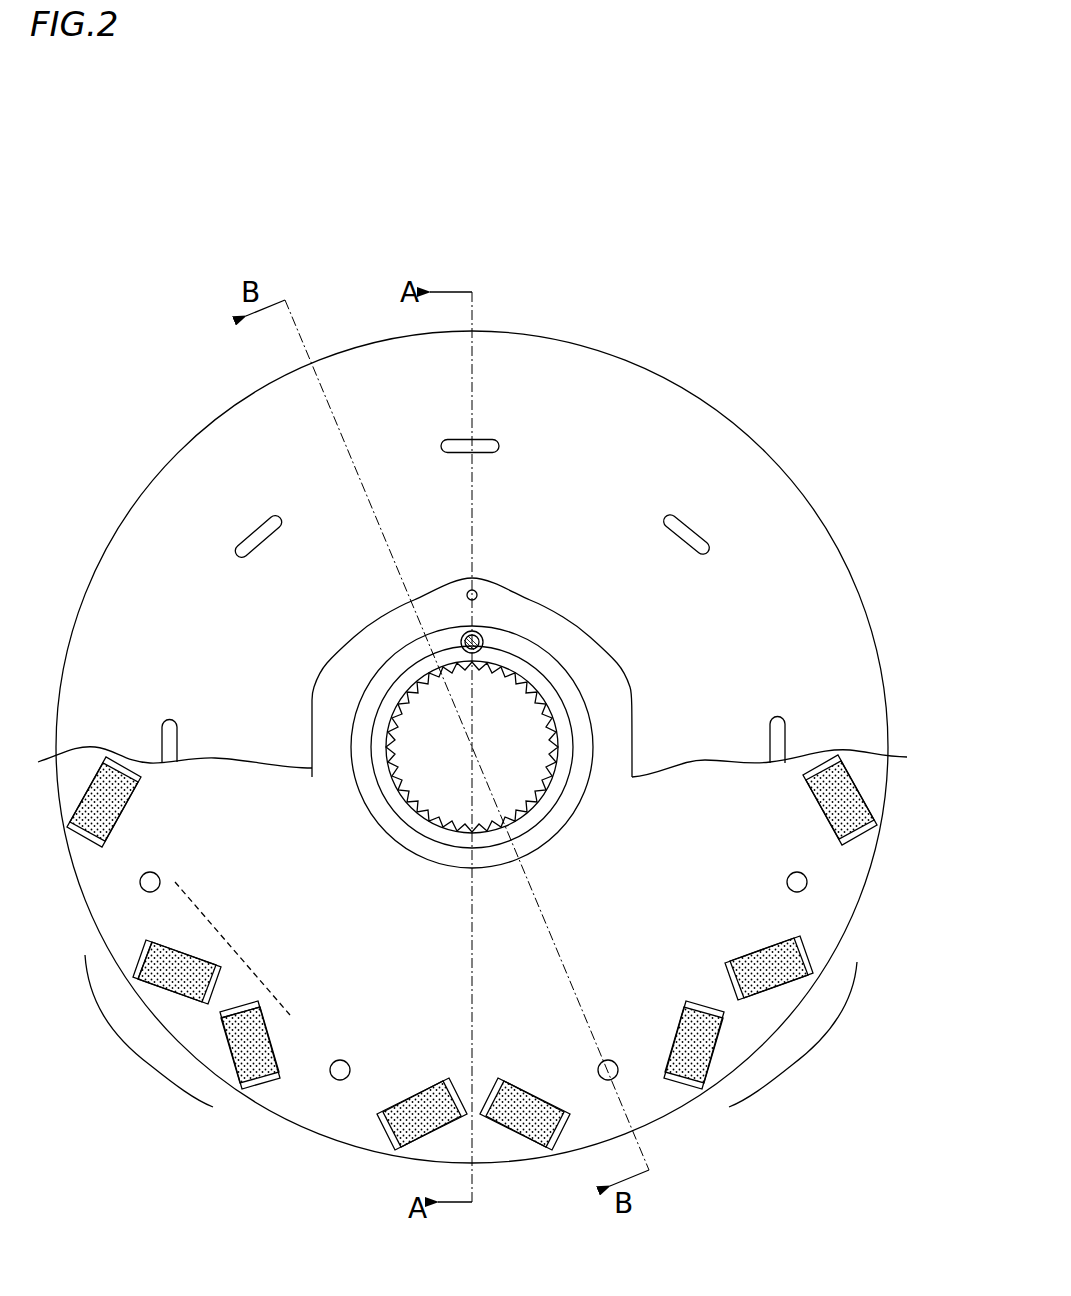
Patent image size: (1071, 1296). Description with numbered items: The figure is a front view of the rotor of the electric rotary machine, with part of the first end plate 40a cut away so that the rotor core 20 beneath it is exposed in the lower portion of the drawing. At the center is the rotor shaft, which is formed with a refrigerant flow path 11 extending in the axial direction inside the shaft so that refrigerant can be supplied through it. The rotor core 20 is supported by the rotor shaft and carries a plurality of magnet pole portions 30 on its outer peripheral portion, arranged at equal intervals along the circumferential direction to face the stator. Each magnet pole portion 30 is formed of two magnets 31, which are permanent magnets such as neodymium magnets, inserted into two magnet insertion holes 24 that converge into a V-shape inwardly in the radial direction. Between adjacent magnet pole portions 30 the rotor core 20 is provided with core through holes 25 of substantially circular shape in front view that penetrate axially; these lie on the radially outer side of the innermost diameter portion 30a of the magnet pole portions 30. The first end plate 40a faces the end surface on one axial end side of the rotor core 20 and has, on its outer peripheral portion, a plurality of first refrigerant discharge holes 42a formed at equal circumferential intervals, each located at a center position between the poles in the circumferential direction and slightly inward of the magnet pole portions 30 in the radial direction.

The refrigerant flow path 11 is at (522, 780).
The rotor core 20 is at (895, 800).
The magnet insertion hole 24 is at (150, 948).
The core through hole 25 is at (158, 875).
The magnet pole portion 30 is at (472, 952).
The innermost diameter portion 30a is at (222, 947).
The magnet 31 is at (173, 950).
The first end plate 40a is at (230, 452).
The first refrigerant discharge hole 42a is at (482, 460).